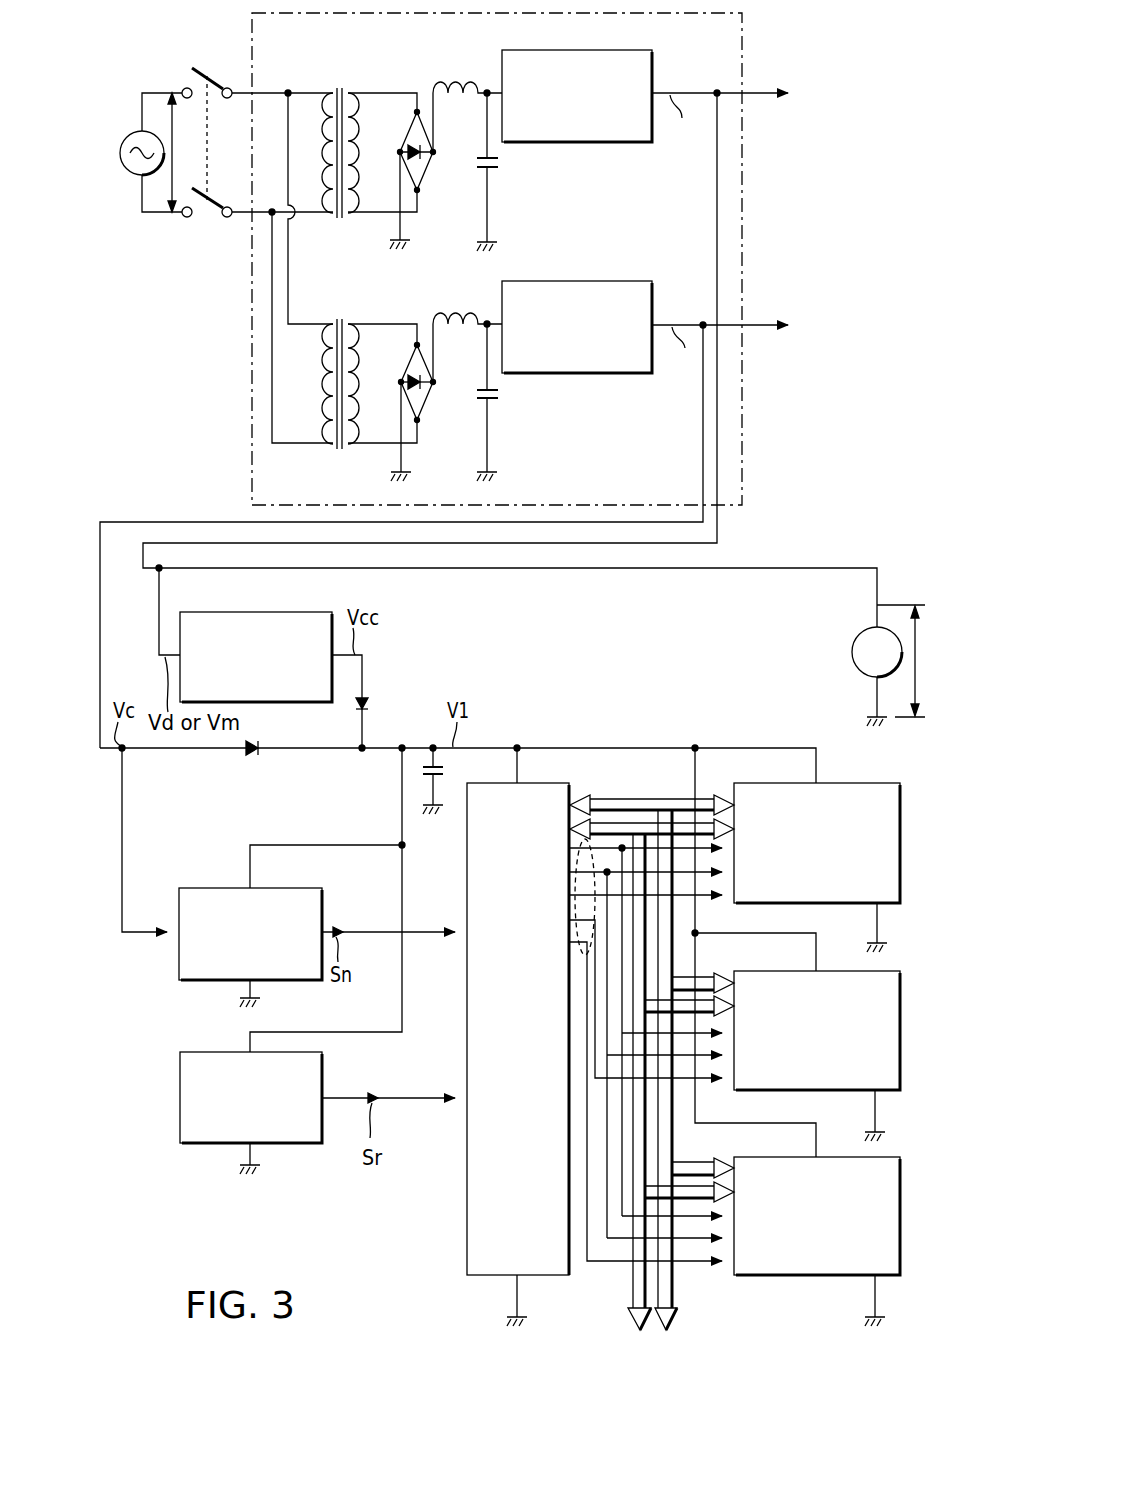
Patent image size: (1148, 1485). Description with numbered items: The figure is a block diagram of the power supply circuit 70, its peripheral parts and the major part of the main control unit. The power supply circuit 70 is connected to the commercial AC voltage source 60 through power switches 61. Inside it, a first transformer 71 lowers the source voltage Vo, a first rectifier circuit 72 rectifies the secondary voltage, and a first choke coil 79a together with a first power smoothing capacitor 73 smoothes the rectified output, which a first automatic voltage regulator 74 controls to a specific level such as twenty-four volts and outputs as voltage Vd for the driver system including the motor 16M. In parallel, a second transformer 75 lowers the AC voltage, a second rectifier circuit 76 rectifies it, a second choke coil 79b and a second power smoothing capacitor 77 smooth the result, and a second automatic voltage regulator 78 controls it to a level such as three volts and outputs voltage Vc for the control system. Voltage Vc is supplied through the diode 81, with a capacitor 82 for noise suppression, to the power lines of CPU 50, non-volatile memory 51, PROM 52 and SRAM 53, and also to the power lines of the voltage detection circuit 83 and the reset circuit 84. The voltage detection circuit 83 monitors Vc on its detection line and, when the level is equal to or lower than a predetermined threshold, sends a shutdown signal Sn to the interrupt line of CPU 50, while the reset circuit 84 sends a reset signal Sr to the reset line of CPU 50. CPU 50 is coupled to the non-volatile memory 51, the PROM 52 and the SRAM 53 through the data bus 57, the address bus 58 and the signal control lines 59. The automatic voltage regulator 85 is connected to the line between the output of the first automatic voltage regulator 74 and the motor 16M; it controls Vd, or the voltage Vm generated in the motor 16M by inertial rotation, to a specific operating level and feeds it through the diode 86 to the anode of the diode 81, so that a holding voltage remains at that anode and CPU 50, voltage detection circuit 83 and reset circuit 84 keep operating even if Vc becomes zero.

The commercial AC voltage source 60 is at (127, 133).
The power switches 61 is at (208, 78).
The power supply circuit 70 is at (252, 319).
The first transformer 71 is at (339, 92).
The first rectifier circuit 72 is at (425, 172).
The first power smoothing capacitor 73 is at (497, 170).
The first automatic voltage regulator 74 is at (606, 143).
The second transformer 75 is at (340, 323).
The second rectifier circuit 76 is at (425, 402).
The second power smoothing capacitor 77 is at (498, 400).
The second automatic voltage regulator 78 is at (607, 374).
The first choke coil 79a is at (440, 81).
The second choke coil 79b is at (440, 312).
The diode 81 is at (256, 752).
The capacitor 82 is at (447, 771).
The voltage detection circuit 83 is at (179, 952).
The reset circuit 84 is at (180, 1115).
The automatic voltage regulator 85 is at (286, 703).
The diode 86 is at (371, 705).
The motor 16M is at (852, 652).
The CPU 50 is at (467, 1240).
The non-volatile memory 51 is at (900, 866).
The PROM 52 is at (901, 1050).
The SRAM 53 is at (901, 1237).
The data bus 57 is at (622, 799).
The address bus 58 is at (648, 822).
The signal control lines 59 is at (588, 857).